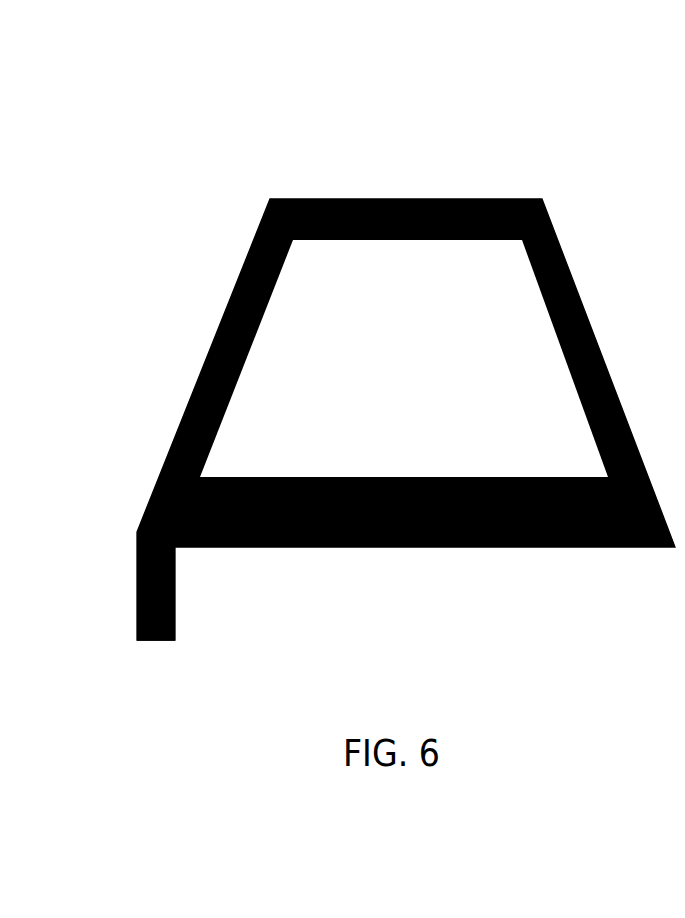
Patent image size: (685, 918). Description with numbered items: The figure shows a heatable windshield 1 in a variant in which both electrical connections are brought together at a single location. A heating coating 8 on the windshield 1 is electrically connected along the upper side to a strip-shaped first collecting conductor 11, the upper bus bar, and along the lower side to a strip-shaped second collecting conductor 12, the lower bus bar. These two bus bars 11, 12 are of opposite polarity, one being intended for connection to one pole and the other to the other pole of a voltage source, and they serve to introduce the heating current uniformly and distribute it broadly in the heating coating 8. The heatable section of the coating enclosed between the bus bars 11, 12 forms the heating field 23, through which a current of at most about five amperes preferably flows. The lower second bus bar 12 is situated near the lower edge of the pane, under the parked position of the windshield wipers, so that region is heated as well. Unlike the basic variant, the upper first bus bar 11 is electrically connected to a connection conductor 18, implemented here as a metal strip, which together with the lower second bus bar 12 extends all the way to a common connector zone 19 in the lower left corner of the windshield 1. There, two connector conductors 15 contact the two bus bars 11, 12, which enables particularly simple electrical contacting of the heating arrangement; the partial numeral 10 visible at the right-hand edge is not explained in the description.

The windshield 1 is at (258, 109).
The heating coating 8 is at (519, 278).
The profile leg 10 is at (672, 495).
The first collecting conductor 11 is at (374, 201).
The second collecting conductor 12 is at (351, 549).
The connector conductors 15 is at (167, 642).
The connection conductor 18 is at (234, 291).
The common connector zone 19 is at (126, 520).
The heating field 23 is at (416, 366).